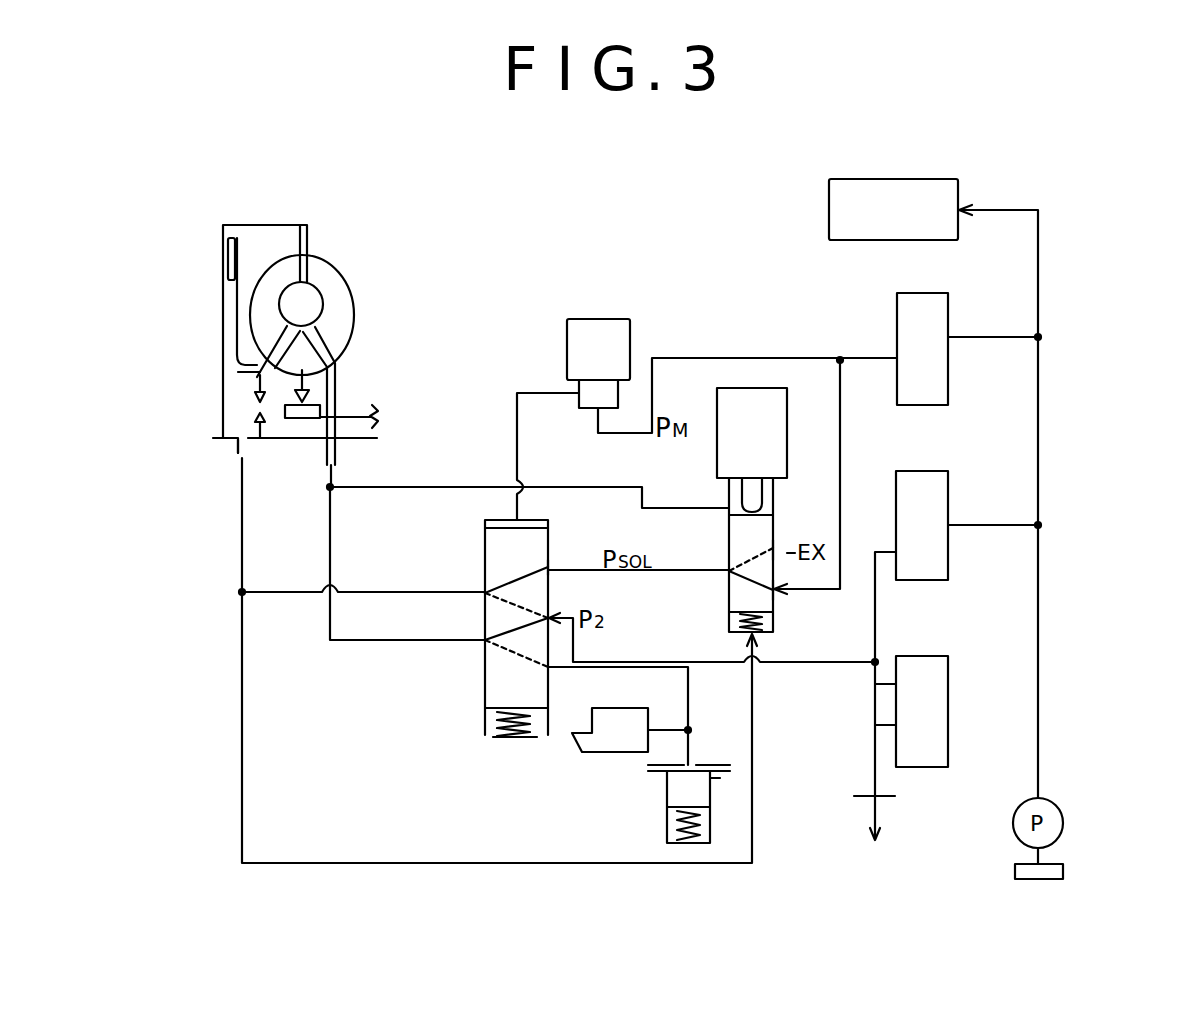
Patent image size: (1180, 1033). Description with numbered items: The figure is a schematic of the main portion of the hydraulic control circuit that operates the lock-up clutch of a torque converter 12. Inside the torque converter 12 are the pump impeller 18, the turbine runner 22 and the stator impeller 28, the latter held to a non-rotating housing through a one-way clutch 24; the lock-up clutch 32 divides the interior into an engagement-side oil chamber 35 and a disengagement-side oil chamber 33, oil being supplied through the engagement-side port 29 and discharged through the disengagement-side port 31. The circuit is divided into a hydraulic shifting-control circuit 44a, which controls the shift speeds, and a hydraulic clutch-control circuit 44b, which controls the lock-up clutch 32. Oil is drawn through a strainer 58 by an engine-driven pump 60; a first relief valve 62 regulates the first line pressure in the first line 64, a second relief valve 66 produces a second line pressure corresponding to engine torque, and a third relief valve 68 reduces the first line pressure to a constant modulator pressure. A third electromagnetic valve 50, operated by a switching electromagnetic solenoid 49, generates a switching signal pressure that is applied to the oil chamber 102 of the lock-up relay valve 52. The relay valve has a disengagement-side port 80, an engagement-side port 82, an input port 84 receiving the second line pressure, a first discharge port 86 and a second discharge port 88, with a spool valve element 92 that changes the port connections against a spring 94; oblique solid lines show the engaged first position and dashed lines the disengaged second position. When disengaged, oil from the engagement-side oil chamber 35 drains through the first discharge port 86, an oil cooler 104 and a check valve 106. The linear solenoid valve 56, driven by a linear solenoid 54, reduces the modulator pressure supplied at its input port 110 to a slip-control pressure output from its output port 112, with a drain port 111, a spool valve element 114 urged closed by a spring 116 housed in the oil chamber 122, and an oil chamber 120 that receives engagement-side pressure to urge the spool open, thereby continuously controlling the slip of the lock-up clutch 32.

The torque converter 12 is at (318, 212).
The pump impeller 18 is at (327, 277).
The turbine runner 22 is at (257, 312).
The one-way clutch 24 is at (295, 418).
The stator impeller 28 is at (310, 372).
The engagement-side port 29 is at (336, 455).
The disengagement-side port 31 is at (233, 450).
The lock-up clutch 32 is at (230, 248).
The disengagement-side oil chamber 33 is at (235, 403).
The engagement-side oil chamber 35 is at (260, 237).
The hydraulic shifting-control circuit 44a is at (862, 178).
The hydraulic clutch-control circuit 44b is at (703, 244).
The switching electromagnetic solenoid 49 is at (578, 335).
The third electromagnetic valve 50 is at (565, 305).
The lock-up relay valve 52 is at (472, 533).
The linear solenoid 54 is at (727, 453).
The linear solenoid valve 56 is at (808, 459).
The strainer 58 is at (1063, 872).
The pump 60 is at (1063, 823).
The first relief valve 62 is at (948, 487).
The first line 64 is at (1040, 398).
The second relief valve 66 is at (948, 680).
The third relief valve 68 is at (948, 307).
The disengagement-side port 80 is at (485, 593).
The engagement-side port 82 is at (485, 640).
The input port 84 is at (548, 618).
The first discharge port 86 is at (548, 667).
The second discharge port 88 is at (548, 567).
The spool valve element 92 is at (495, 672).
The spring 94 is at (495, 722).
The oil chamber 102 is at (528, 525).
The oil cooler 104 is at (610, 743).
The check valve 106 is at (672, 787).
The input port 110 is at (777, 593).
The drain port 111 is at (773, 557).
The output port 112 is at (730, 572).
The spool valve element 114 is at (728, 590).
The spring 116 is at (775, 632).
The oil chamber 120 is at (767, 493).
The oil chamber 122 is at (728, 622).